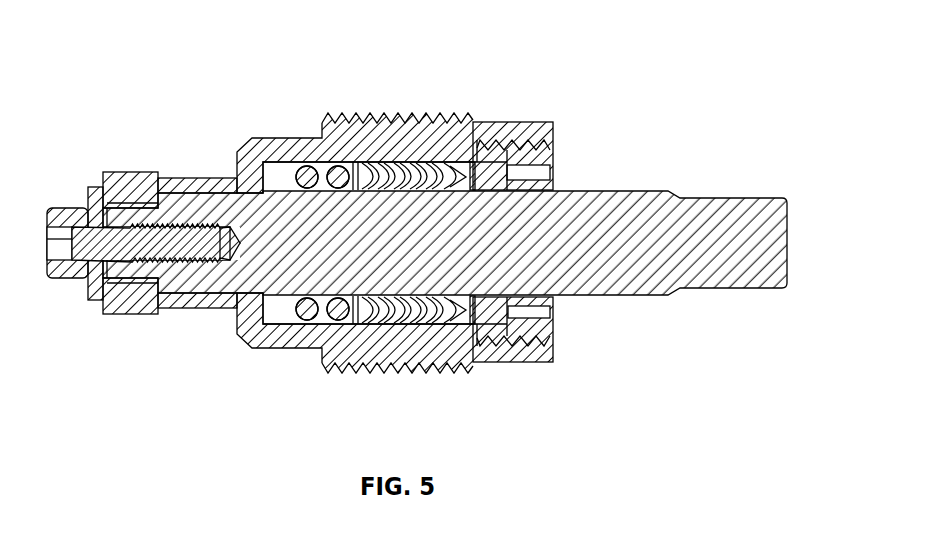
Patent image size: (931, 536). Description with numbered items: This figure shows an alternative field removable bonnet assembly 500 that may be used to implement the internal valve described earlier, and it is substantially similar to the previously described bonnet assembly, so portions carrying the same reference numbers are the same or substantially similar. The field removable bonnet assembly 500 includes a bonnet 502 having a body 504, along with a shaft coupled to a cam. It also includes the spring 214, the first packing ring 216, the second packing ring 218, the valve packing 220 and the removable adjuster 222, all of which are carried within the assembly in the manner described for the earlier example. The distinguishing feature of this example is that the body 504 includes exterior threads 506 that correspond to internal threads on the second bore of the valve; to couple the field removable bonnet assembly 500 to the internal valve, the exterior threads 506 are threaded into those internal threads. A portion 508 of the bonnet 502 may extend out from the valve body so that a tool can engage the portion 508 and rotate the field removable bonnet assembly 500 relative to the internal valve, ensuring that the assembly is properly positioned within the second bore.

The field removable bonnet assembly 500 is at (113, 48).
The bonnet 502 is at (272, 335).
The body 504 is at (307, 333).
The exterior threads 506 is at (377, 370).
The portion 508 is at (528, 363).
The spring 214 is at (308, 163).
The first packing ring 216 is at (357, 163).
The second packing ring 218 is at (473, 160).
The valve packing 220 is at (410, 167).
The removable adjuster 222 is at (552, 298).